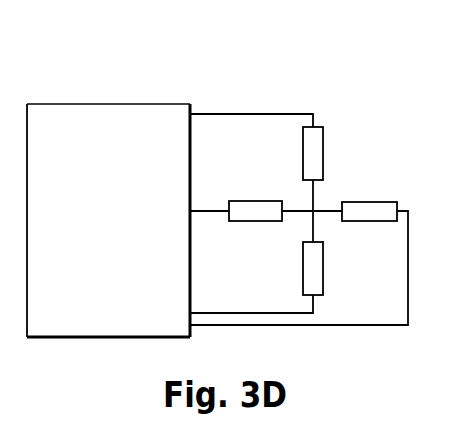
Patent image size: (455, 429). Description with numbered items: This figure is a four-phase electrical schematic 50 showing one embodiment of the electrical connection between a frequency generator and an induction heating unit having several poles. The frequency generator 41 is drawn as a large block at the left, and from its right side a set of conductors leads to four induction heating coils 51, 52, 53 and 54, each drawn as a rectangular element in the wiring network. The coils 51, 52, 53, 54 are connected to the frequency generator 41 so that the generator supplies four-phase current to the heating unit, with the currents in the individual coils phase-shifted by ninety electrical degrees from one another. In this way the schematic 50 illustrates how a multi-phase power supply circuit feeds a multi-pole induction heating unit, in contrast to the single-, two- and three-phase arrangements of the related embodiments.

The frequency generator 41 is at (168, 104).
The four-phase electrical schematic 50 is at (299, 189).
The induction heating coil 51 is at (325, 168).
The induction heating coil 52 is at (362, 202).
The induction heating coil 53 is at (323, 282).
The induction heating coil 54 is at (243, 200).